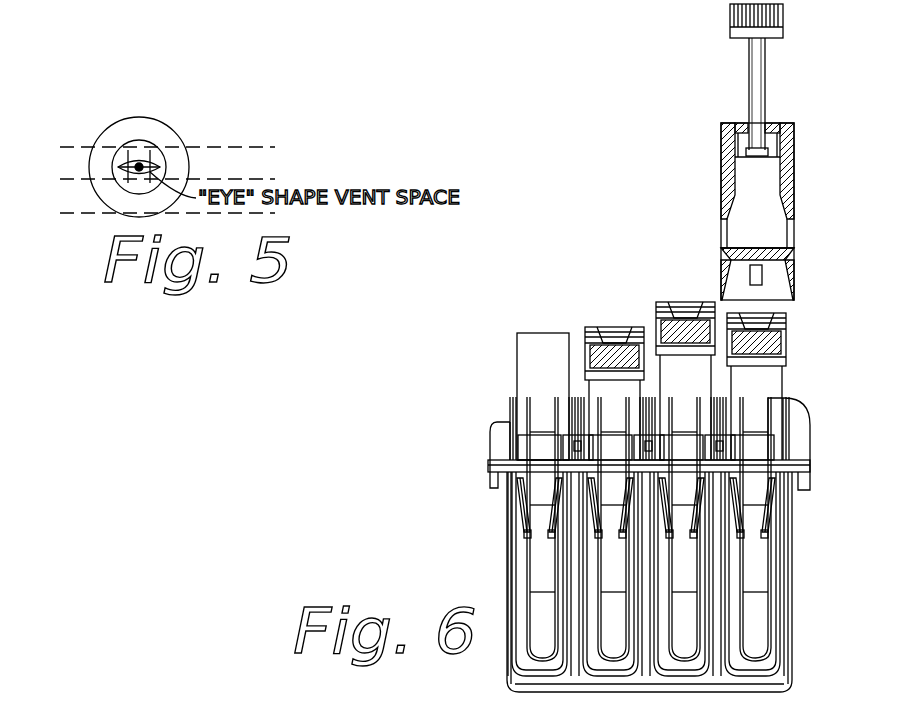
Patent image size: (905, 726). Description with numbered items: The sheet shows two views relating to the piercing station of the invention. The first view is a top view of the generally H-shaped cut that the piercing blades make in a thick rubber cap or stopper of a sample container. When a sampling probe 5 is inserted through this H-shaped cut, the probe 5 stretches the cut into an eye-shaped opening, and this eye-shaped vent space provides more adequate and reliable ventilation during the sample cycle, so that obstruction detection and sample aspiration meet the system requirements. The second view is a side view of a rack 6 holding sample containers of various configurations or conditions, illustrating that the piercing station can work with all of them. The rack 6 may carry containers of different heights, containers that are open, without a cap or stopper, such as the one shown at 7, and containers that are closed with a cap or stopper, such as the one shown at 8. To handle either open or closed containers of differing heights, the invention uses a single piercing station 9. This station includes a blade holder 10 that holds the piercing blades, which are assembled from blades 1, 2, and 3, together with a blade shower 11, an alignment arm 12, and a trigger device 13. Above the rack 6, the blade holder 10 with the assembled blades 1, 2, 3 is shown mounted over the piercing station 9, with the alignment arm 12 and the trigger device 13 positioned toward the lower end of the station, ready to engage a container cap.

In FIG. 6, the blade 1 is at (715, 97).
In FIG. 6, the blade 2 is at (715, 97).
In FIG. 6, the blade 3 is at (748, 72).
In FIG. 5, the sampling probe 5 is at (141, 165).
In FIG. 6, the rack 6 is at (507, 500).
In FIG. 6, the open sample container 7 is at (545, 333).
In FIG. 6, the closed sample container 8 is at (789, 343).
In FIG. 6, the piercing station 9 is at (720, 185).
In FIG. 6, the blade holder 10 is at (787, 32).
In FIG. 6, the blade shower 11 is at (721, 158).
In FIG. 6, the alignment arm 12 is at (757, 273).
In FIG. 6, the trigger device 13 is at (750, 275).